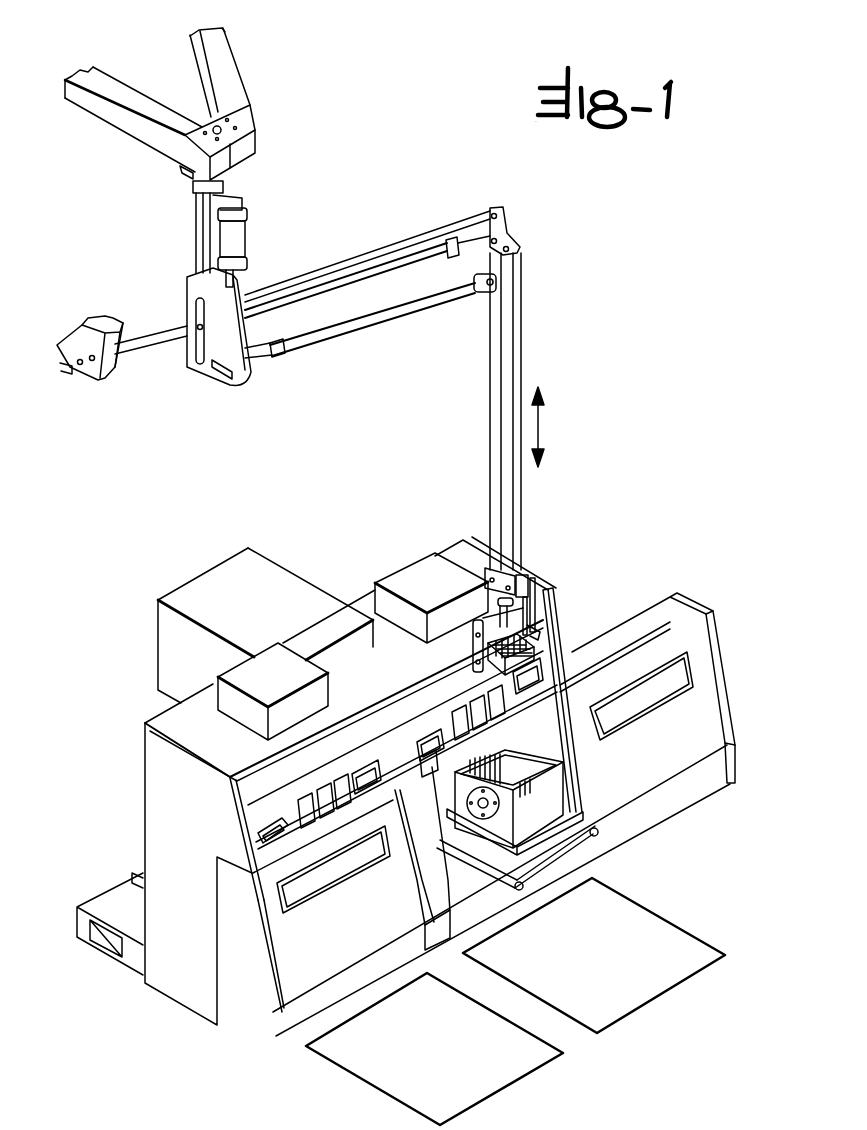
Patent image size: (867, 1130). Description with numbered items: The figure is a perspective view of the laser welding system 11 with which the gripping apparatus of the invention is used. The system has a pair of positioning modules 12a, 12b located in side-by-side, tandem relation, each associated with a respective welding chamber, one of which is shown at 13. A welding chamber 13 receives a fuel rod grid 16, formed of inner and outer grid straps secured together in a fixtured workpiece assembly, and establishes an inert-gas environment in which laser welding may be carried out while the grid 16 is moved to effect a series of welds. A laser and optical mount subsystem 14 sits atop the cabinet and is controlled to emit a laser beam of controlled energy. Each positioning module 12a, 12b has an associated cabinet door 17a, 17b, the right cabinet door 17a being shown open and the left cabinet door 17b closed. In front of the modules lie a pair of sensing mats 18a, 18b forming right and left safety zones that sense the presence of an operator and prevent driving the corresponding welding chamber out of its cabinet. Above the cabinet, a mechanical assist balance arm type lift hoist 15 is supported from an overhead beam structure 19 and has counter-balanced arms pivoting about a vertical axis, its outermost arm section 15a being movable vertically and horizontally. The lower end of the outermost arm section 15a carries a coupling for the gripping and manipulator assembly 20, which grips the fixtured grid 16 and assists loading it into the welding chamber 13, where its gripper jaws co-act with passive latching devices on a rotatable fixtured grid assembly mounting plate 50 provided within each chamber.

The laser welding system 11 is at (318, 572).
The positioning module 12a is at (563, 787).
The positioning module 12b is at (283, 973).
The welding chamber 13 is at (552, 777).
The laser and optical mount subsystem 14 is at (263, 565).
The mechanical assist balance arm type lift hoist 15 is at (544, 318).
The outermost arm section 15a is at (521, 524).
The fuel rod grid 16 is at (553, 635).
The cabinet door 17a is at (702, 652).
The cabinet door 17b is at (318, 970).
The sensing mat 18a is at (660, 983).
The sensing mat 18b is at (483, 1080).
The overhead beam structure 19 is at (247, 117).
The gripping and manipulator assembly 20 is at (464, 667).
The rotatable fixtured grid assembly mounting plate 50 is at (563, 692).